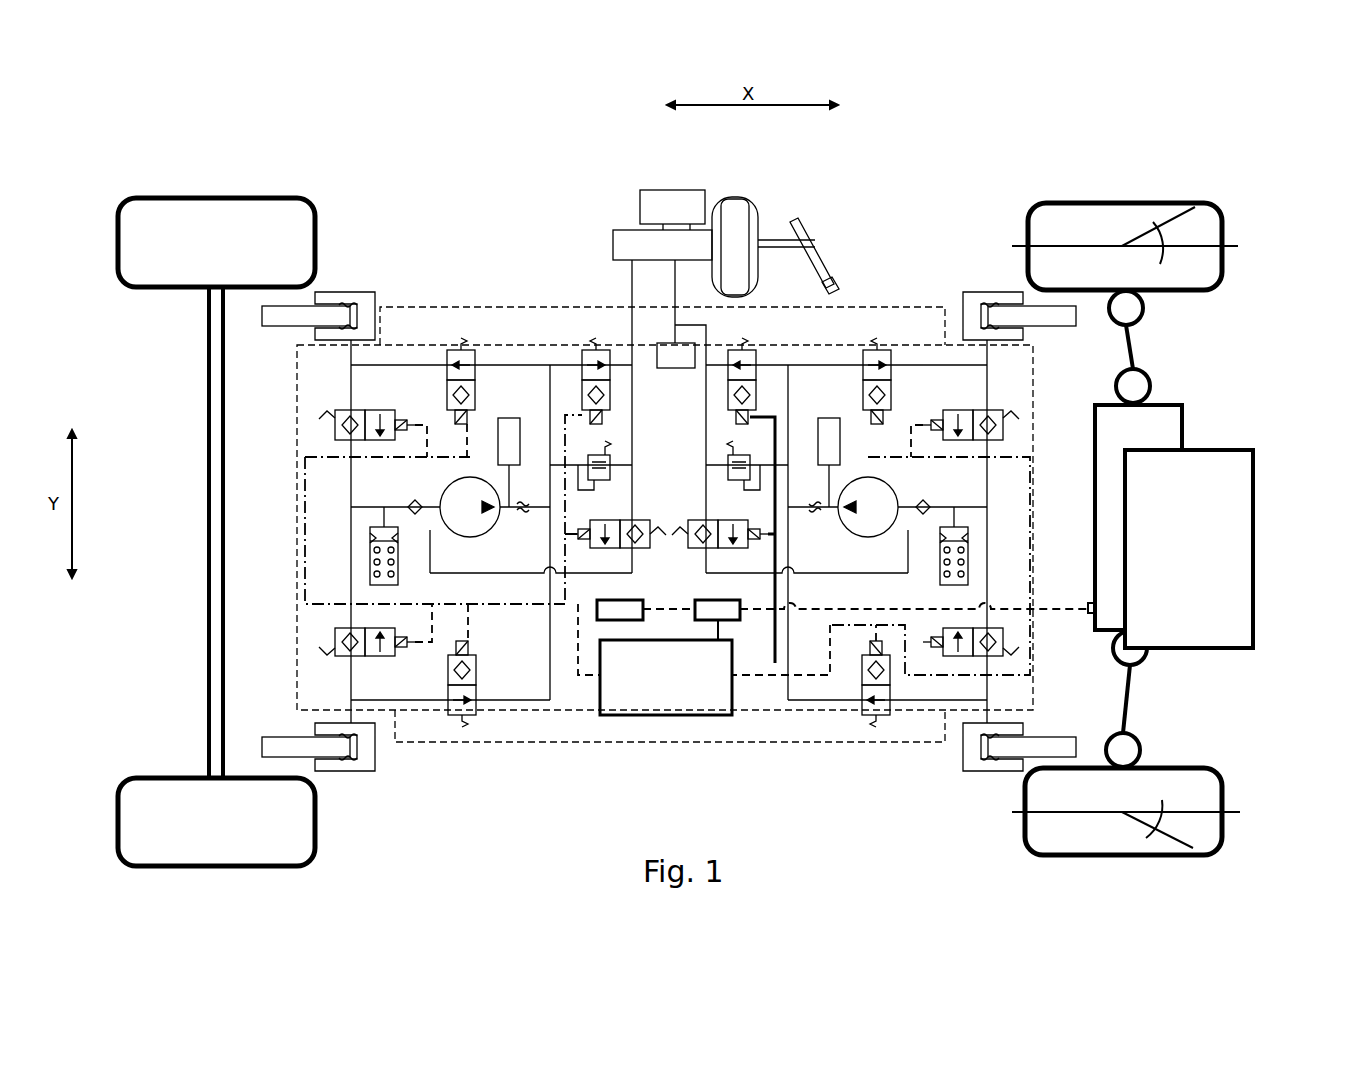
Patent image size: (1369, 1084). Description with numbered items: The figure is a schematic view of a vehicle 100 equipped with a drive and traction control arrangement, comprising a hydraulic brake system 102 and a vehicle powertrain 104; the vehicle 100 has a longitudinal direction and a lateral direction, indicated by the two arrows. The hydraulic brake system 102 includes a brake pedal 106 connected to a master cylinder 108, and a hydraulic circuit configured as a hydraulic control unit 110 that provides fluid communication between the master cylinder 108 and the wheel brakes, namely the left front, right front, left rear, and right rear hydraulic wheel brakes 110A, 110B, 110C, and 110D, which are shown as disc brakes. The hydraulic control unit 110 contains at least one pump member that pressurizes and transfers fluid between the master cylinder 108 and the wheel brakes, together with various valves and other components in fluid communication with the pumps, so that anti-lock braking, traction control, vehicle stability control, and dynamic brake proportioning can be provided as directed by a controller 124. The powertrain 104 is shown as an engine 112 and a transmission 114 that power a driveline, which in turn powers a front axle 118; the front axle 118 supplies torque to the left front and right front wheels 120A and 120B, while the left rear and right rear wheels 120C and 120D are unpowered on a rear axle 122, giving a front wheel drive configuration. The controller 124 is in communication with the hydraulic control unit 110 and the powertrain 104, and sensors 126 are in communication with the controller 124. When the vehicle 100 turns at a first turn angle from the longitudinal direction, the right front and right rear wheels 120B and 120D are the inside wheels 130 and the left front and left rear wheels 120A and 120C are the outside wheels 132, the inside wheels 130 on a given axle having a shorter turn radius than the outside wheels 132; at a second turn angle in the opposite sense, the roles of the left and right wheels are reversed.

The vehicle 100 is at (541, 154).
The hydraulic brake system 102 is at (541, 262).
The vehicle powertrain 104 is at (1212, 529).
The brake pedal 106 is at (813, 246).
The master cylinder 108 is at (613, 243).
The hydraulic control unit 110 is at (899, 292).
The left front hydraulic wheel brake 110A is at (1005, 294).
The right front hydraulic wheel brake 110B is at (1005, 771).
The left rear hydraulic wheel brake 110C is at (345, 294).
The right rear hydraulic wheel brake 110D is at (345, 771).
The engine 112 is at (1253, 455).
The transmission 114 is at (1178, 405).
The front axle 118 is at (1128, 350).
The left front wheel 120A is at (1078, 235).
The right front wheel 120B is at (1075, 845).
The left rear wheel 120C is at (214, 253).
The right rear wheel 120D is at (221, 835).
The rear axle 122 is at (208, 517).
The controller 124 is at (666, 677).
The sensors 126 is at (708, 608).
The inside wheels 130 is at (577, 762).
The outside wheels 132 is at (901, 203).